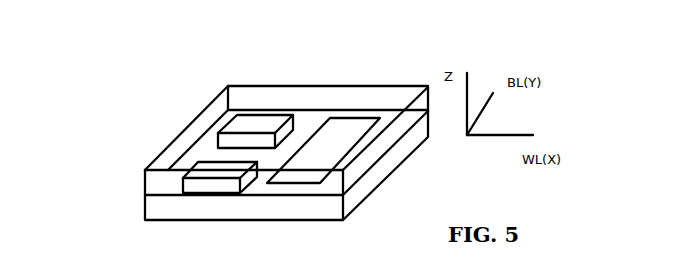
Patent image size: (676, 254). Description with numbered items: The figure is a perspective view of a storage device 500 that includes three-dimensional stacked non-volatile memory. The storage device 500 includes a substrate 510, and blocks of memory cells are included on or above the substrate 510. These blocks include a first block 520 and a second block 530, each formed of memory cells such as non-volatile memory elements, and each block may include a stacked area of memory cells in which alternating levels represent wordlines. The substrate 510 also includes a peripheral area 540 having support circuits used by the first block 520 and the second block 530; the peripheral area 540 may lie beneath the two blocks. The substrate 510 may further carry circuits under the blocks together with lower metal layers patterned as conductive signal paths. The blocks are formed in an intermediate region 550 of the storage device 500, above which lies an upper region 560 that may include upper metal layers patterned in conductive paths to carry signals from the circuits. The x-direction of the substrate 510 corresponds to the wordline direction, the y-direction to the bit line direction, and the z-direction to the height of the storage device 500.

The storage device 500 is at (190, 94).
The substrate 510 is at (143, 208).
The first block 520 is at (217, 139).
The second block 530 is at (240, 196).
The peripheral area 540 is at (357, 119).
The intermediate region 550 is at (143, 183).
The upper region 560 is at (142, 163).